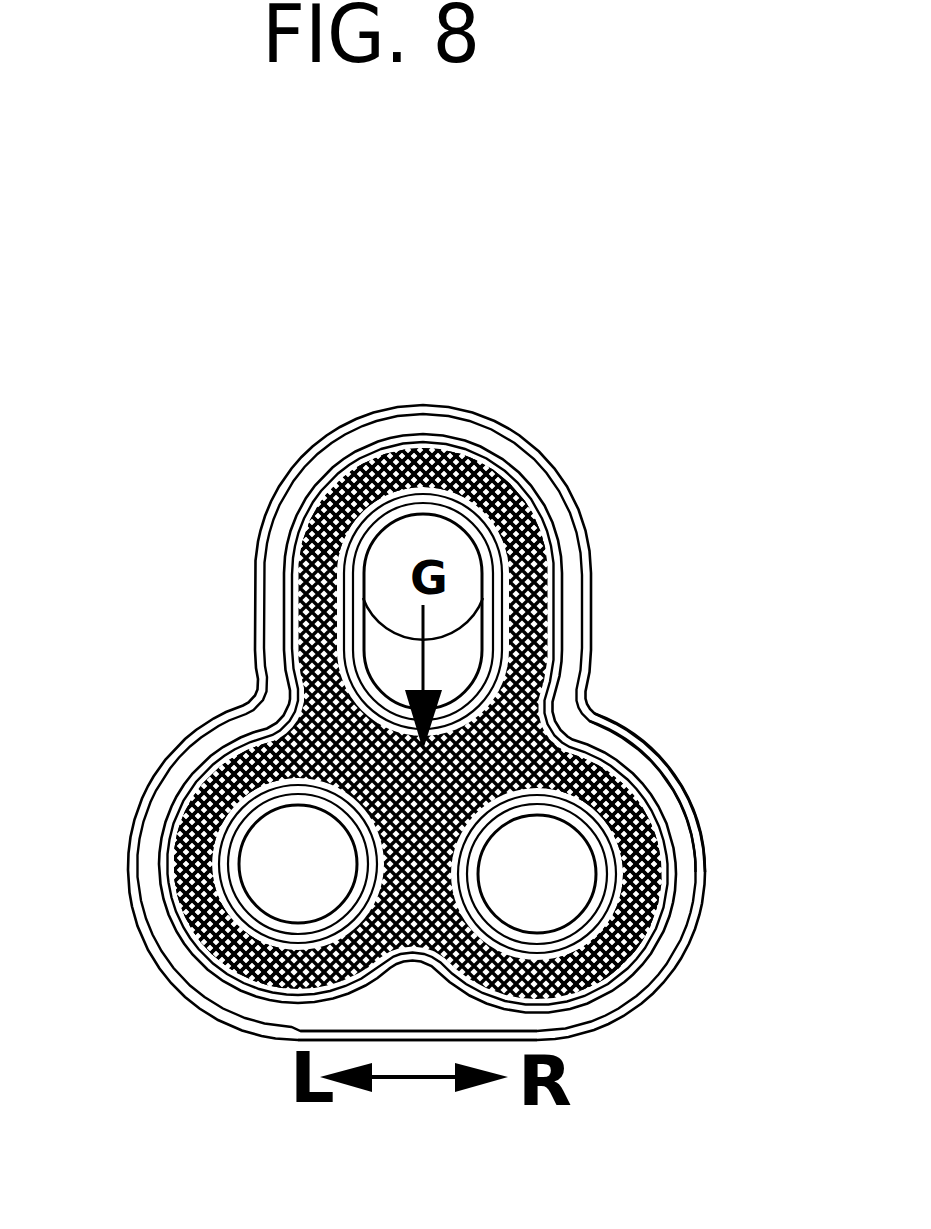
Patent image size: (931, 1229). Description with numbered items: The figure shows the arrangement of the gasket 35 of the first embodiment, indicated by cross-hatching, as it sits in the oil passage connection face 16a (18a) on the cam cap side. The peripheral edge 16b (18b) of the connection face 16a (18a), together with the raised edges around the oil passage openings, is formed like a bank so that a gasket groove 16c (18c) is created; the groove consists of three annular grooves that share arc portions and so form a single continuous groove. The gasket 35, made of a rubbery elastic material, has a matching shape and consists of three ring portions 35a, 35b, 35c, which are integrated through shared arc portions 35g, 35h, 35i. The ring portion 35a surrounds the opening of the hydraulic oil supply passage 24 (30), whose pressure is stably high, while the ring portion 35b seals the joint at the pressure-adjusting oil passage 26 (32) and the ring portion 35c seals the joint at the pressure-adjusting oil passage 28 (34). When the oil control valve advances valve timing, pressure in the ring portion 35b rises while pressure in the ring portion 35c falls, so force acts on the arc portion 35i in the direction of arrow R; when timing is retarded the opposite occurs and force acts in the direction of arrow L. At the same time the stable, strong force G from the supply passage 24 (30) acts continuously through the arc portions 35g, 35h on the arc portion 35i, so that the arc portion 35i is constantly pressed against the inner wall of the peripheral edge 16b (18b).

The oil passage connection face 16a is at (400, 722).
The oil passage connection face 18a is at (291, 512).
The peripheral edge 16b is at (511, 1053).
The peripheral edge 18b is at (417, 1035).
The gasket groove 16c is at (694, 793).
The gasket groove 18c is at (636, 757).
The hydraulic oil supply passage 24 is at (526, 611).
The hydraulic oil supply passage 30 is at (464, 665).
The pressure-adjusting oil passage 26 is at (213, 897).
The pressure-adjusting oil passage 32 is at (298, 864).
The pressure-adjusting oil passage 28 is at (626, 902).
The pressure-adjusting oil passage 34 is at (537, 874).
The gasket 35 is at (594, 708).
The ring portion 35a is at (523, 477).
The ring portion 35b is at (222, 783).
The ring portion 35c is at (663, 795).
The arc portion 35g is at (319, 762).
The arc portion 35h is at (533, 765).
The arc portion 35i is at (590, 907).